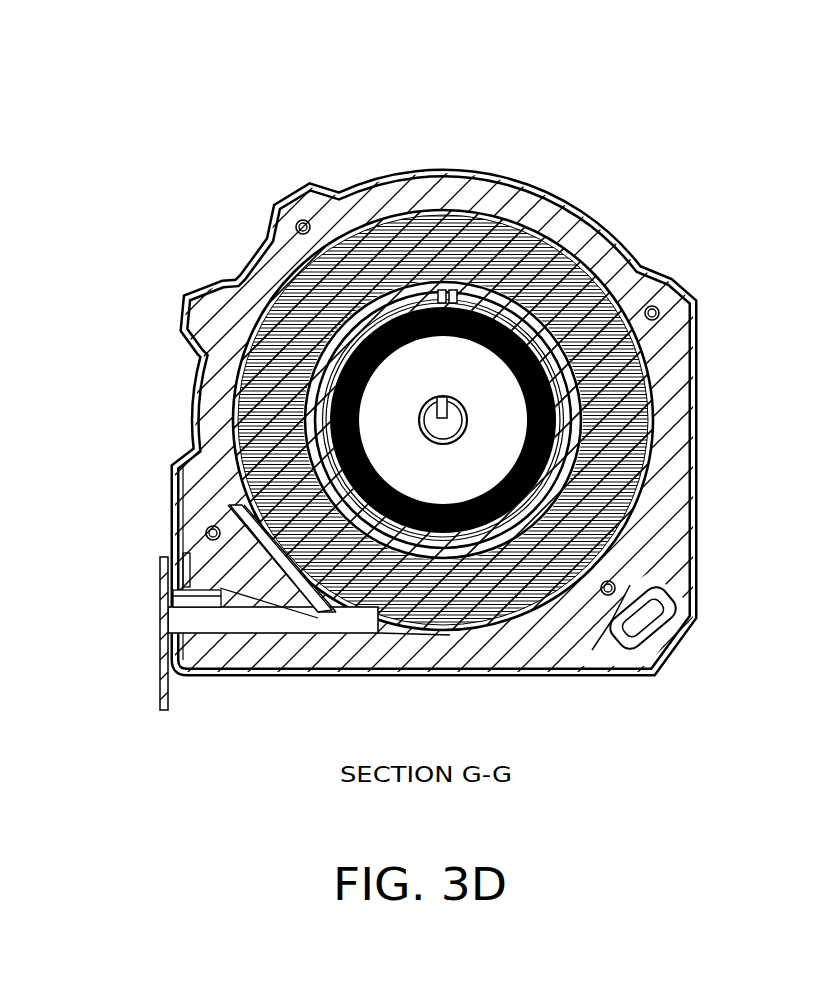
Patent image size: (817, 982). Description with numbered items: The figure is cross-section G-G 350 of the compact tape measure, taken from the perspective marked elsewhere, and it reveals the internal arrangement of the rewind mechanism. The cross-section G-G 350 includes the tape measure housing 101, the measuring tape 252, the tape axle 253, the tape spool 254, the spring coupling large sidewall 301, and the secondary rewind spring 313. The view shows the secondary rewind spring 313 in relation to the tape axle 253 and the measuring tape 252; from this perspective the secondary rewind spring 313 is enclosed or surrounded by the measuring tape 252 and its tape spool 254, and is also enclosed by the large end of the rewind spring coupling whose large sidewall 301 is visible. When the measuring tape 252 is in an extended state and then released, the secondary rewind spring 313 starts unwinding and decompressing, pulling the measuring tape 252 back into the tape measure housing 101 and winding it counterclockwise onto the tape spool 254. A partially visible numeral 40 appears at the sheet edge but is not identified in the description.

The tape measure housing 101 is at (387, 177).
The measuring tape 252 is at (318, 300).
The tape axle 253 is at (425, 414).
The tape spool 254 is at (455, 302).
The spring coupling large sidewall 301 is at (448, 300).
The secondary rewind spring 313 is at (548, 440).
The cross-section G-G 350 is at (408, 402).
The partial numeral (cut off) 40 is at (807, 341).